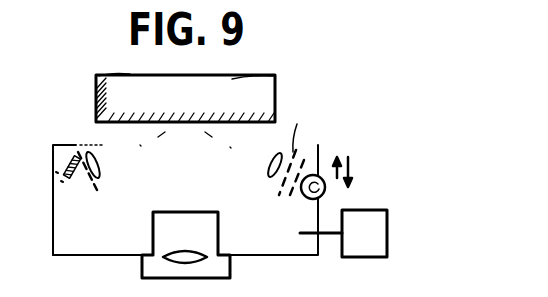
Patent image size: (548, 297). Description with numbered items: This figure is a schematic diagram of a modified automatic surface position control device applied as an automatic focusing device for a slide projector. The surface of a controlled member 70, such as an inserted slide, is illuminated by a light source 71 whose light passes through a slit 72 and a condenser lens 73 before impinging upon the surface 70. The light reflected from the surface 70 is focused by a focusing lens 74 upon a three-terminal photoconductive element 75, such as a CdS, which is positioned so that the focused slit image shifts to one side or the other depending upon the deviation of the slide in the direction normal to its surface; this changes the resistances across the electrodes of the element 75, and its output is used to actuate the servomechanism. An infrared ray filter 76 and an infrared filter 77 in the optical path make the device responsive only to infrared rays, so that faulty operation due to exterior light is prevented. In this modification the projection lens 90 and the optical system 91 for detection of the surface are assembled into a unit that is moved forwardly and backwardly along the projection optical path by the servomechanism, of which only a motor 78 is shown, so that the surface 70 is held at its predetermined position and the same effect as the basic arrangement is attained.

The surface of a controlled member 70 is at (96, 120).
The light source 71 is at (308, 199).
The slit 72 is at (283, 196).
The condenser lens 73 is at (270, 175).
The focusing lens 74 is at (98, 178).
The three-terminal photoconductive element 75 is at (75, 184).
The infrared ray filter 76 is at (304, 126).
The infrared filter 77 is at (95, 190).
The servomotor 78 is at (388, 222).
The projection lens 90 is at (231, 262).
The optical system 91 is at (311, 150).